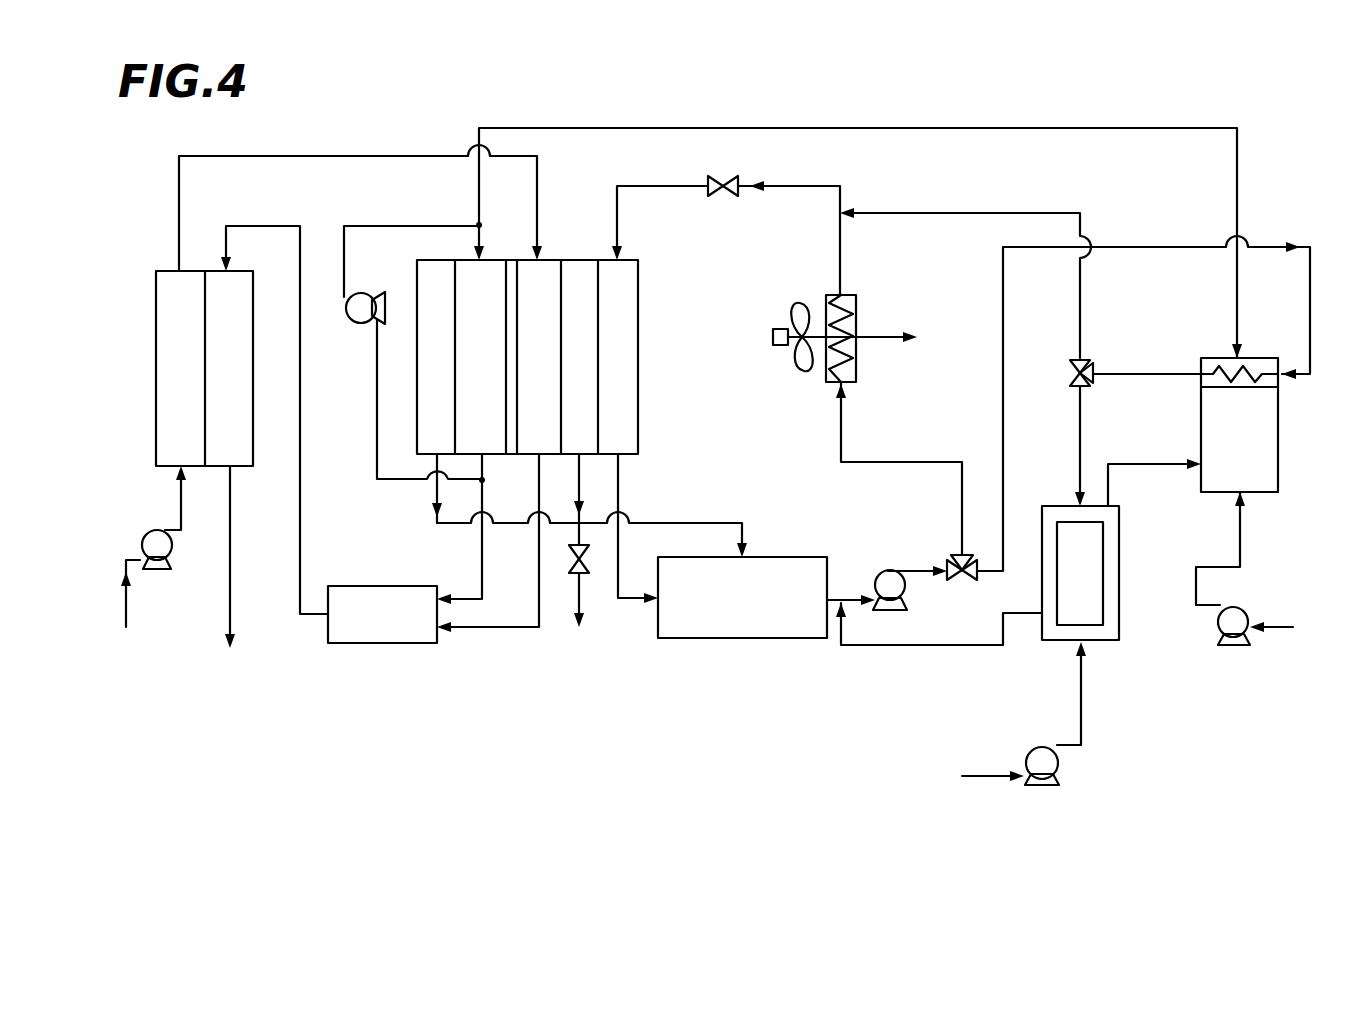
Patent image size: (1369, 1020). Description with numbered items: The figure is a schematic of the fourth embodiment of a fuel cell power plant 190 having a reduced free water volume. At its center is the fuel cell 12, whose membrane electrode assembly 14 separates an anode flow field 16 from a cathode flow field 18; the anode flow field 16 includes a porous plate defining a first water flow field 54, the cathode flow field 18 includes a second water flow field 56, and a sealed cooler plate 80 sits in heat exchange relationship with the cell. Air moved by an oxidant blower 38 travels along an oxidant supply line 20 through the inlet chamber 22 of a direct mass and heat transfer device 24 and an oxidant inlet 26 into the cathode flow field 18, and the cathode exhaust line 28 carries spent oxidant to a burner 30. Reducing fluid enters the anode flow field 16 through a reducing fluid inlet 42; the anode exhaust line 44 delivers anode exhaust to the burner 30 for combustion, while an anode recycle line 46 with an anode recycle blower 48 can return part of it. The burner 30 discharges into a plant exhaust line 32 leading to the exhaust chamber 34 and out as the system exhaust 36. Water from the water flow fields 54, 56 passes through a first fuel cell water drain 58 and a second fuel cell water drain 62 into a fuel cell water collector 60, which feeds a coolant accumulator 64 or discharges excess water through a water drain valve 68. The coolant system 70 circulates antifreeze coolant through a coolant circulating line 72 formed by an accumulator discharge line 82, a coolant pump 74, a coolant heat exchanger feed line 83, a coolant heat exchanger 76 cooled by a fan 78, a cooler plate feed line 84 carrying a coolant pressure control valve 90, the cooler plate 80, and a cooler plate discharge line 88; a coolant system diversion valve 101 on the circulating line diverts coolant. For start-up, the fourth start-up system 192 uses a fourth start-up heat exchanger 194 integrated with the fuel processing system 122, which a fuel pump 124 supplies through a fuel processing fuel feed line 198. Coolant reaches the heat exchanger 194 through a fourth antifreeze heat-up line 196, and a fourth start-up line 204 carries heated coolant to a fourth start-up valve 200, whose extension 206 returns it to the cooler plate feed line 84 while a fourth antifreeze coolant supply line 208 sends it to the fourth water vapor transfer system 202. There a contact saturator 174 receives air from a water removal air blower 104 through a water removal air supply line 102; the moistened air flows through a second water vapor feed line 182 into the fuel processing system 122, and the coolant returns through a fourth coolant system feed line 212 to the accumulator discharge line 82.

The fuel cell 12 is at (582, 228).
The membrane electrode assembly 14 is at (510, 267).
The anode flow field 16 is at (497, 327).
The cathode flow field 18 is at (553, 327).
The oxidant supply line 20 is at (126, 598).
The inlet chamber 22 is at (193, 389).
The direct mass and heat transfer device 24 is at (156, 300).
The oxidant inlet 26 is at (318, 155).
The cathode exhaust line 28 is at (539, 584).
The burner 30 is at (370, 586).
The plant exhaust line 32 is at (305, 458).
The exhaust chamber 34 is at (240, 389).
The system exhaust 36 is at (232, 545).
The oxidant blower 38 is at (150, 536).
The reducing fluid inlet 42 is at (710, 128).
The anode exhaust line 44 is at (480, 546).
The anode recycle line 46 is at (377, 385).
The anode recycle blower 48 is at (362, 302).
The first water flow field 54 is at (450, 363).
The second water flow field 56 is at (595, 361).
The first fuel cell water drain 58 is at (433, 492).
The fuel cell water collector 60 is at (515, 520).
The second fuel cell water drain 62 is at (582, 482).
The coolant accumulator 64 is at (813, 555).
The water drain valve 68 is at (572, 558).
The coolant system 70 is at (860, 528).
The coolant circulating line 72 is at (840, 425).
The coolant pump 74 is at (887, 577).
The coolant heat exchanger 76 is at (853, 308).
The fan 78 is at (773, 337).
The sealed cooler plate 80 is at (630, 325).
The accumulator discharge line 82 is at (850, 603).
The coolant heat exchanger feed line 83 is at (910, 577).
The cooler plate feed line 84 is at (800, 185).
The cooler plate discharge line 88 is at (618, 499).
The coolant pressure control valve 90 is at (732, 192).
The coolant system diversion valve 101 is at (977, 562).
The water removal air supply line 102 is at (1081, 717).
The water removal air blower 104 is at (1052, 762).
The fuel processing system 122 is at (1250, 482).
The fuel pump 124 is at (1250, 622).
The contact saturator 174 is at (1120, 558).
The second water vapor feed line 182 is at (1147, 463).
The fuel cell power plant 190 is at (1272, 128).
The fourth start-up system 192 is at (1185, 270).
The fourth start-up heat exchanger 194 is at (1263, 362).
The fourth antifreeze heat-up line 196 is at (1002, 283).
The fuel processing fuel feed line 198 is at (1196, 583).
The fourth start-up valve 200 is at (1072, 368).
The fourth water vapor transfer system 202 is at (1050, 465).
The fourth start-up line 204 is at (1147, 373).
The extension of the fourth start-up line 206 is at (945, 213).
The fourth antifreeze coolant supply line 208 is at (1080, 437).
The fourth coolant system feed line 212 is at (942, 647).